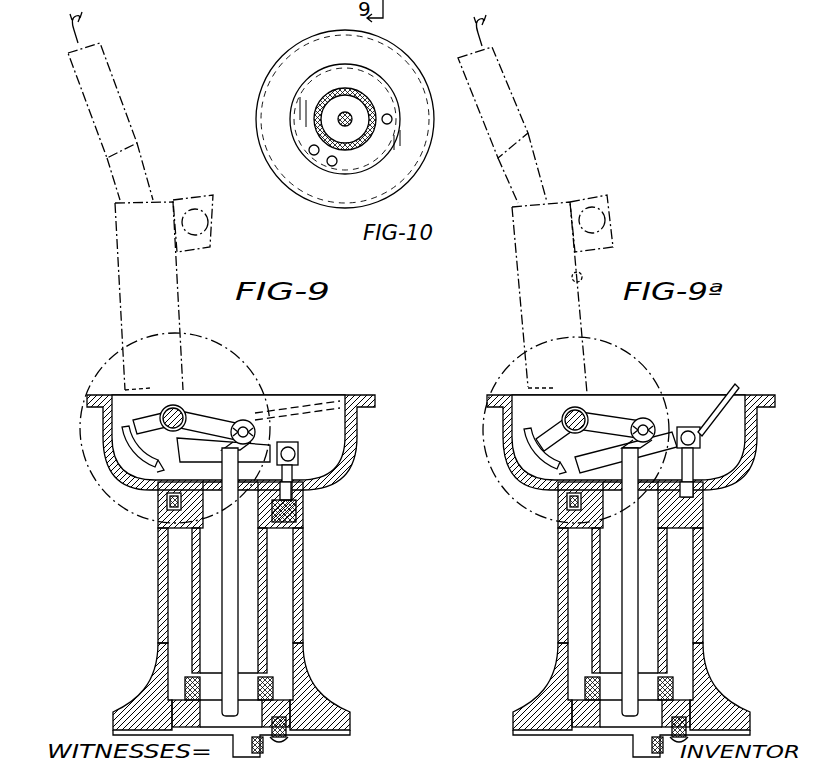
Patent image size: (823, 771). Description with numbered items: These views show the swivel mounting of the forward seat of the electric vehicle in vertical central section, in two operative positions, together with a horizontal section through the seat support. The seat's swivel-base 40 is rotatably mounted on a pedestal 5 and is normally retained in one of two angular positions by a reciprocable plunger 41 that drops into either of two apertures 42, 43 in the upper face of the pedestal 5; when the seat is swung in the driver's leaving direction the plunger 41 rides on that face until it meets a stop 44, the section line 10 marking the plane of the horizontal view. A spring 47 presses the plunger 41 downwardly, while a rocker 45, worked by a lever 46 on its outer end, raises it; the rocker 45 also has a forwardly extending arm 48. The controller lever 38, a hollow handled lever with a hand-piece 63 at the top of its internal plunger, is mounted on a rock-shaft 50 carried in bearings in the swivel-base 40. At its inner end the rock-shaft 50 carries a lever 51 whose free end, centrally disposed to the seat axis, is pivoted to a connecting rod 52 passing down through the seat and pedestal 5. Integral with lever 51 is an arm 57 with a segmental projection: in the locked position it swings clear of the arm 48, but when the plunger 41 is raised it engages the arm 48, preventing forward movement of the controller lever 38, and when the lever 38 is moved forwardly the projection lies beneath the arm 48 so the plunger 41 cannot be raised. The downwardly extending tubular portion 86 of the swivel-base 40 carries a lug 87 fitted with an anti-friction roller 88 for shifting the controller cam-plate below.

In FIG. 9, the pedestal 5 is at (163, 600).
In FIG. 9A, the pedestal 5 is at (566, 582).
In FIG. 10, the pedestal 5 is at (289, 122).
In FIG. 9, the section line 10— 10 is at (115, 504).
In FIG. 9, the controller lever 38 is at (143, 180).
In FIG. 9A, the controller lever 38 is at (534, 166).
In FIG. 9, the swivel-base 40 is at (346, 468).
In FIG. 9A, the swivel-base 40 is at (740, 472).
In FIG. 9, the plunger 41 is at (303, 482).
In FIG. 9A, the plunger 41 is at (695, 456).
In FIG. 9, the aperture 42 is at (291, 519).
In FIG. 10, the aperture 42 is at (392, 123).
In FIG. 10, the aperture 43 is at (332, 166).
In FIG. 9, the stop 44 is at (170, 500).
In FIG. 9A, the stop 44 is at (574, 501).
In FIG. 10, the stop 44 is at (309, 152).
In FIG. 9, the rocker 45 is at (255, 445).
In FIG. 9A, the rocker 45 is at (668, 432).
In FIG. 9, the lever 46 is at (330, 408).
In FIG. 9A, the lever 46 is at (733, 386).
In FIG. 9, the spring 47 is at (285, 443).
In FIG. 9A, the spring 47 is at (700, 446).
In FIG. 9, the forwardly extending arm 48 is at (197, 440).
In FIG. 9A, the forwardly extending arm 48 is at (612, 466).
In FIG. 9, the rock-shaft 50 is at (180, 410).
In FIG. 9A, the rock-shaft 50 is at (582, 410).
In FIG. 9, the lever 51 is at (245, 421).
In FIG. 9A, the lever 51 is at (598, 412).
In FIG. 9, the connecting rod 52 is at (225, 578).
In FIG. 9A, the connecting rod 52 is at (626, 554).
In FIG. 10, the connecting rod 52 is at (340, 117).
In FIG. 9, the arm 57 is at (112, 425).
In FIG. 9A, the arm 57 is at (512, 425).
In FIG. 9, the hand-piece 63 is at (213, 210).
In FIG. 9A, the hand-piece 63 is at (615, 203).
In FIG. 9, the tubular portion 86 is at (268, 608).
In FIG. 9A, the tubular portion 86 is at (670, 608).
In FIG. 10, the tubular portion 86 is at (357, 90).
In FIG. 9, the lug 87 is at (257, 760).
In FIG. 9A, the lug 87 is at (648, 750).
In FIG. 9, the anti-friction roller 88 is at (262, 748).
In FIG. 9A, the anti-friction roller 88 is at (688, 722).